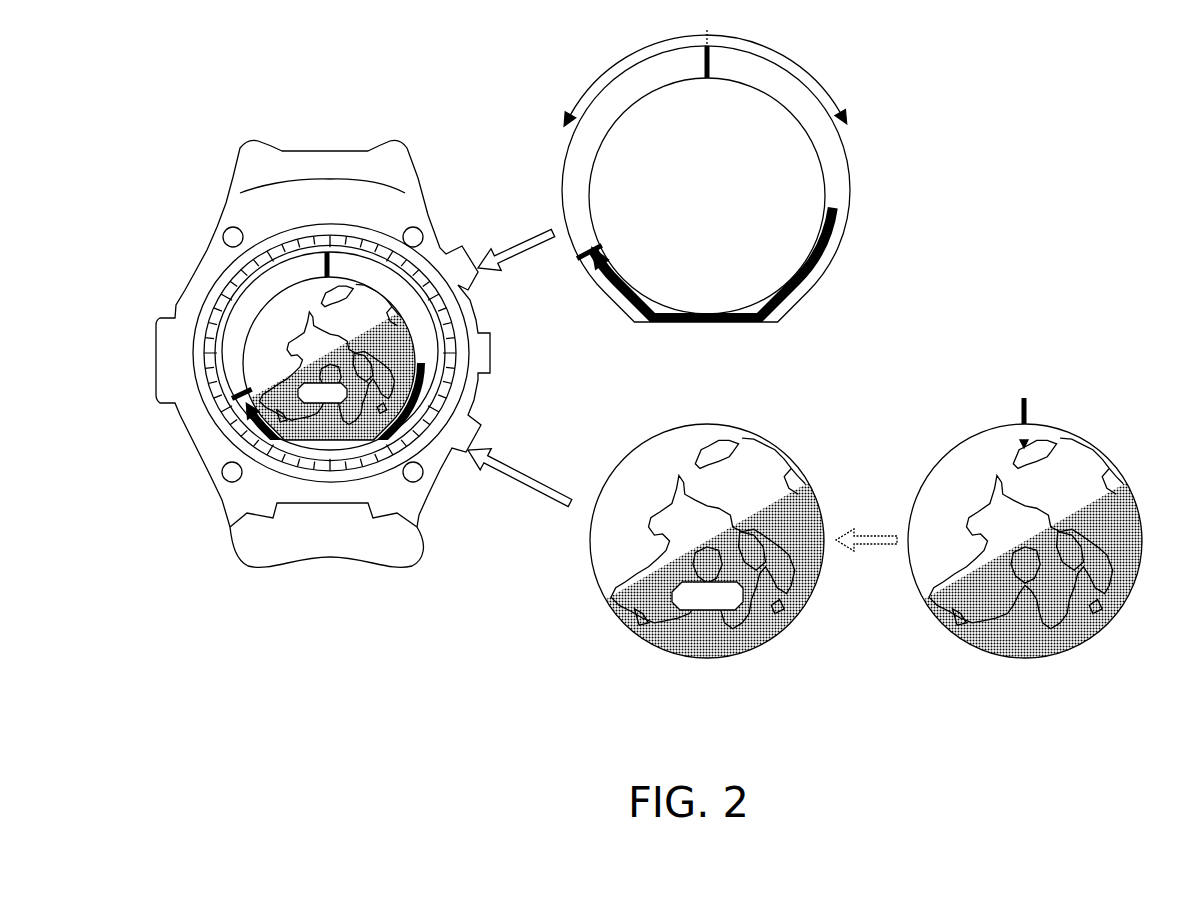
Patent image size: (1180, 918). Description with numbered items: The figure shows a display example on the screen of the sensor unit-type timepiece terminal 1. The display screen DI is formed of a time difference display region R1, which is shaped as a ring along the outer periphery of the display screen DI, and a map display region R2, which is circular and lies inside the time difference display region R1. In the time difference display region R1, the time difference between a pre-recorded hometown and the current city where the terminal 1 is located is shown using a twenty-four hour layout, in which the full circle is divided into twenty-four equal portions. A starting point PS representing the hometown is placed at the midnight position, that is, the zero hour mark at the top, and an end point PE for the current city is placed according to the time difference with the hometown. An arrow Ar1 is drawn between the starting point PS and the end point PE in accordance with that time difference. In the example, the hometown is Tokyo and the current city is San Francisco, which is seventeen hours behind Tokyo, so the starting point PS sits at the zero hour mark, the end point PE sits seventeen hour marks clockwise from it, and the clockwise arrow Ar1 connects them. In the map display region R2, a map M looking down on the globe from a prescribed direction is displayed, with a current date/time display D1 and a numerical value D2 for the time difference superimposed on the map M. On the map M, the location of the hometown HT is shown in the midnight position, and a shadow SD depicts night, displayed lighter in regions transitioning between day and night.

The sensor unit-type timepiece terminal 1 is at (305, 148).
The display screen DI is at (243, 262).
The starting point PS is at (712, 48).
The end point PE is at (578, 262).
The time difference display region R1 is at (876, 104).
The arrow Ar1 is at (824, 282).
The map display region R2 is at (802, 432).
The map M is at (738, 432).
The shadow SD is at (812, 590).
The current date/time display D1 is at (608, 482).
The numerical value D2 is at (702, 614).
The hometown HT is at (1024, 443).